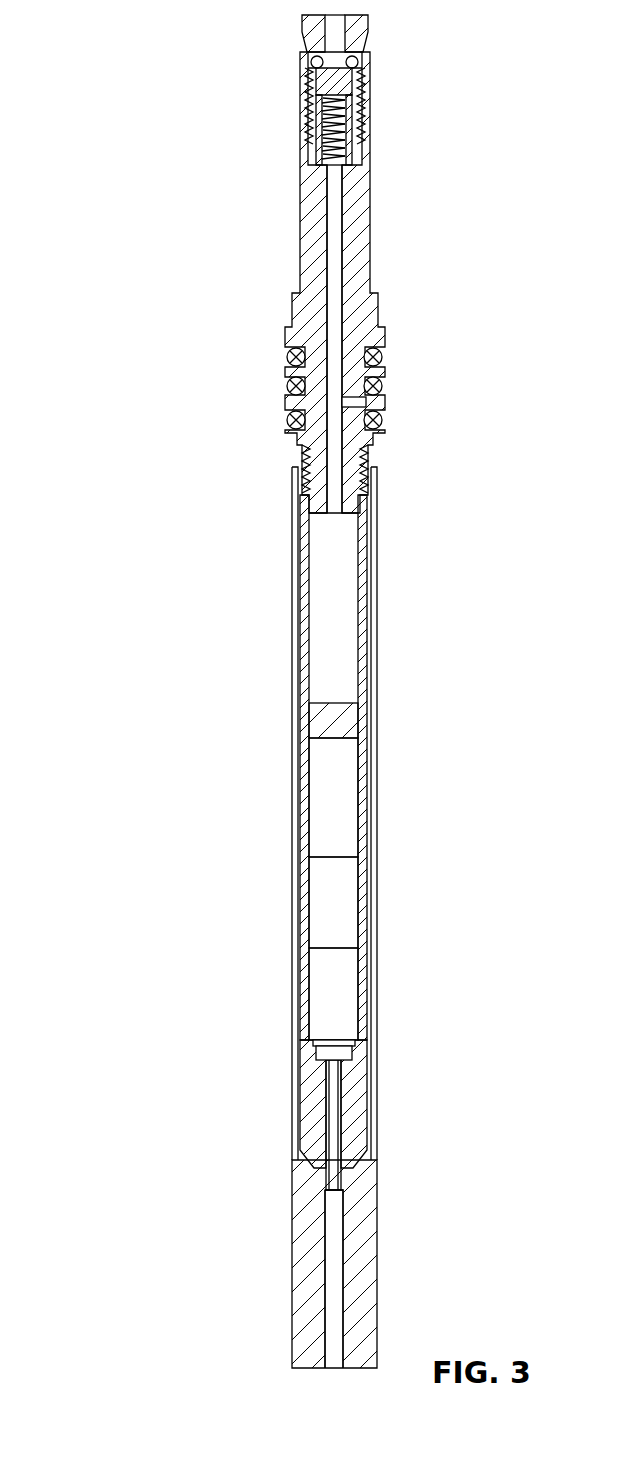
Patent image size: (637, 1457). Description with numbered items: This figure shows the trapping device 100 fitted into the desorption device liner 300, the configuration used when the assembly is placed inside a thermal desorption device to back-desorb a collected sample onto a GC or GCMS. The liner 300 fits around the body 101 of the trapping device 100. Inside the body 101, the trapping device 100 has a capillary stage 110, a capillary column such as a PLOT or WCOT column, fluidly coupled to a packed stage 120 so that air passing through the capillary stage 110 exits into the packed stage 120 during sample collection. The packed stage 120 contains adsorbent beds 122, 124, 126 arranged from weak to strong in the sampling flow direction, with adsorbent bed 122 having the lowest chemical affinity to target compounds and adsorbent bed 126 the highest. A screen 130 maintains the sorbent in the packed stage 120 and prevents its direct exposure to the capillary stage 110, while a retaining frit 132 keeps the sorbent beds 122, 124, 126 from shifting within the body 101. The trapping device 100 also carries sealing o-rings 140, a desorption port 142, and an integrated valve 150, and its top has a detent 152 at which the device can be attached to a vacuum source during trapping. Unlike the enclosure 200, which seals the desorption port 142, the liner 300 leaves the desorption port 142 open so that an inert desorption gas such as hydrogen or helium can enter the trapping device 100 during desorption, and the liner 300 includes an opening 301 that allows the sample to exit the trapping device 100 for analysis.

The trapping device 100 is at (108, 88).
The body 101 is at (303, 560).
The capillary stage 110 is at (346, 1115).
The packed stage 120 is at (315, 800).
The adsorbent bed 122 is at (323, 985).
The adsorbent bed 124 is at (305, 898).
The adsorbent bed 126 is at (298, 843).
The screen 130 is at (312, 1045).
The retaining frit 132 is at (323, 722).
The sealing o-rings 140 is at (288, 360).
The desorption port 142 is at (376, 404).
The integrated valve 150 is at (303, 80).
The detent 152 is at (303, 44).
The enclosure 200 is at (378, 556).
The desorption device liner 300 is at (366, 1316).
The opening 301 is at (324, 1312).